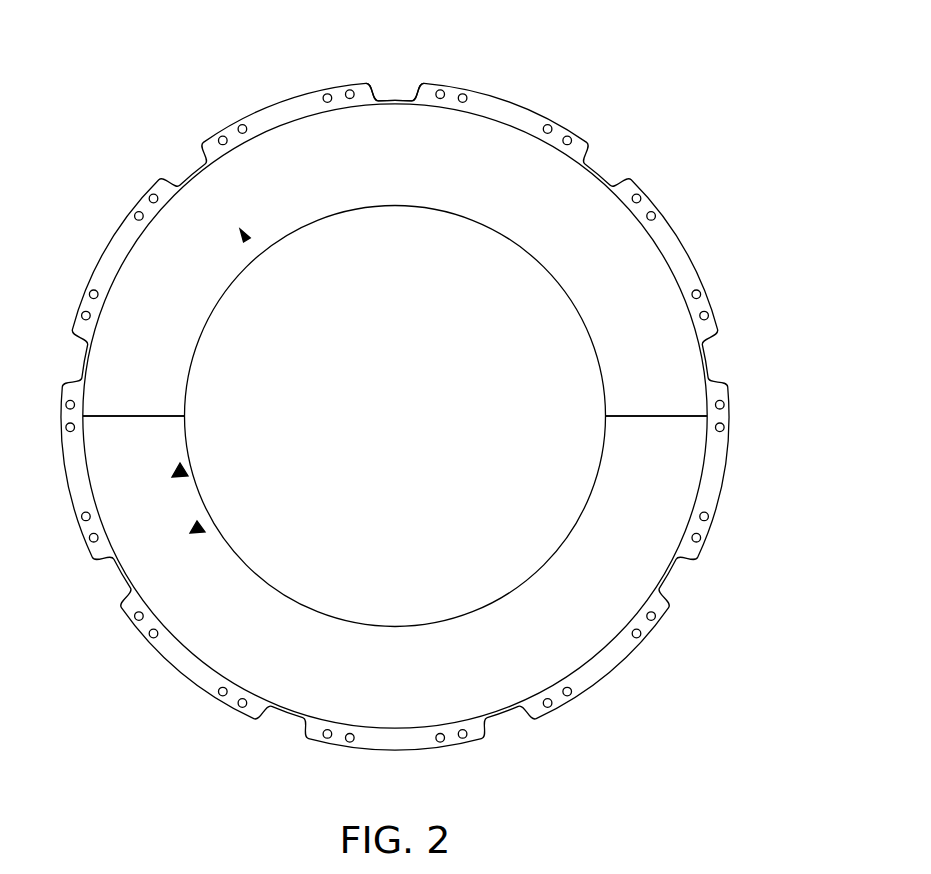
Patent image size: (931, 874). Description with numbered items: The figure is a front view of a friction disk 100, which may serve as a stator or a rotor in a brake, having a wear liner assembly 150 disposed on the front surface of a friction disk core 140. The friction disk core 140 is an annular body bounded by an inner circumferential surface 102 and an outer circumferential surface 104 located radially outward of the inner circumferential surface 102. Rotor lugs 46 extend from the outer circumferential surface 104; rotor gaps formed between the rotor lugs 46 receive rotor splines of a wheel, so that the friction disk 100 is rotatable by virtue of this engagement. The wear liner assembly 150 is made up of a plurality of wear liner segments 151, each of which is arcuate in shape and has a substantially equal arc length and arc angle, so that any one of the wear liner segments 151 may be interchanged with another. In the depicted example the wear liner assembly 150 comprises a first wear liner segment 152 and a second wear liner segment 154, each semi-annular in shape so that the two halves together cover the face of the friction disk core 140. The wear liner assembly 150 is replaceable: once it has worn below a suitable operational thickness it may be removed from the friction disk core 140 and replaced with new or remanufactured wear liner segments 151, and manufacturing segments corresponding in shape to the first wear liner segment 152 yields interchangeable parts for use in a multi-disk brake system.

The friction disk 100 is at (99, 76).
The rotor lugs 46 is at (279, 75).
The outer circumferential surface 104 is at (386, 95).
The inner circumferential surface 102 is at (352, 212).
The friction disk core 140 is at (708, 493).
The wear liner assembly 150 is at (186, 473).
The wear liner segments 151 is at (243, 233).
The first wear liner segment 152 is at (246, 614).
The second wear liner segment 154 is at (186, 310).